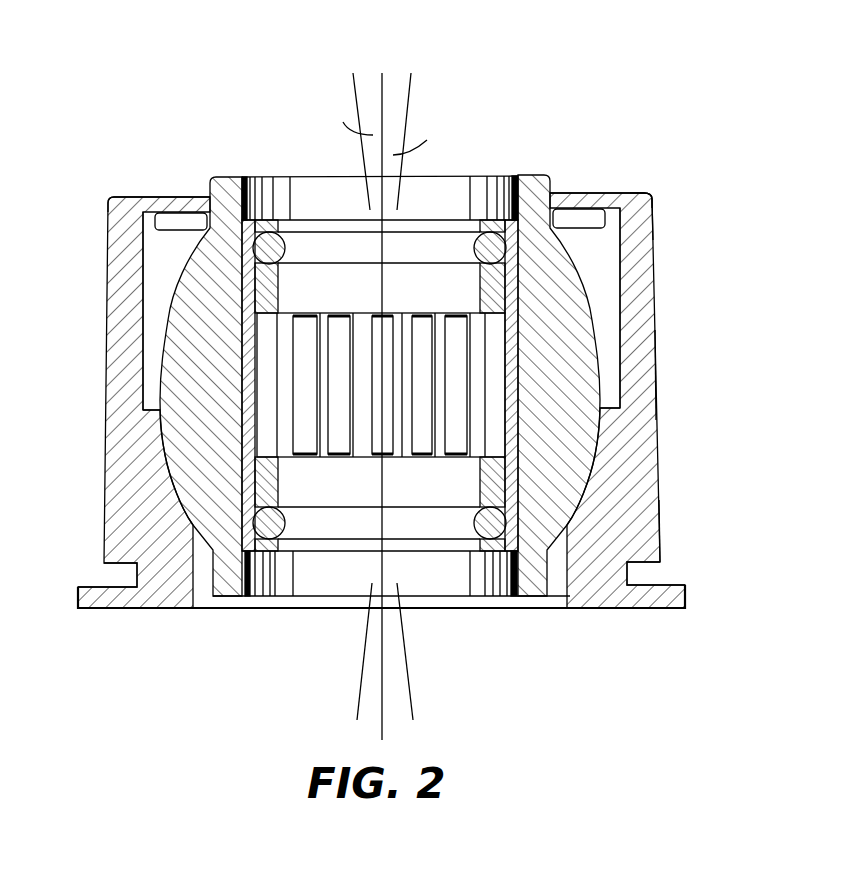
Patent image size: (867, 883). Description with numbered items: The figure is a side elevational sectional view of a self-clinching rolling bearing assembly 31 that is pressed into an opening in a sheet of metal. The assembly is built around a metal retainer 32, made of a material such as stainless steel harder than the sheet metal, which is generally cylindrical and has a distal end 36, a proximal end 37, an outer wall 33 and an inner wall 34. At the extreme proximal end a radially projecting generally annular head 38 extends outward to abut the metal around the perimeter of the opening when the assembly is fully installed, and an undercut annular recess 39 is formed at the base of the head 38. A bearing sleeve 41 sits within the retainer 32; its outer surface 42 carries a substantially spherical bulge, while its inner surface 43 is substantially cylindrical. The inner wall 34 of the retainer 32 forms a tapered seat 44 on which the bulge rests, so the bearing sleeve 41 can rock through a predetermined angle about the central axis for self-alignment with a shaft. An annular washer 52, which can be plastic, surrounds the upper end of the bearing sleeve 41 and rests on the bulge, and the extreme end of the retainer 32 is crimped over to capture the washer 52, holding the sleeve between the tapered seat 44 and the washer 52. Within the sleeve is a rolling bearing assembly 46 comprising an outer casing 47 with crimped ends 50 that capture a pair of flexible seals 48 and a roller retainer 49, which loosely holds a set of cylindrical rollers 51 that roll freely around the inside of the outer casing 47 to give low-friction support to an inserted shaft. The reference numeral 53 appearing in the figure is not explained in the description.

The rolling bearing assembly 31 is at (568, 97).
The metal retainer 32 is at (683, 383).
The outer wall 33 is at (658, 363).
The inner wall 34 is at (605, 257).
The distal end 36 is at (658, 205).
The proximal end 37 is at (676, 535).
The head 38 is at (104, 597).
The undercut annular recess 39 is at (128, 566).
The bearing sleeve 41 is at (160, 293).
The outer surface 42 is at (163, 327).
The inner surface 43 is at (263, 193).
The tapered seat 44 is at (163, 420).
The rolling bearing assembly 46 is at (490, 208).
The outer casing 47 is at (243, 283).
The flexible seals 48 is at (330, 237).
The roller retainer 49 is at (438, 452).
The crimped ends 50 is at (457, 223).
The cylindrical rollers 51 is at (377, 433).
The annular washer 52 is at (190, 220).
The top flange 53 is at (128, 196).